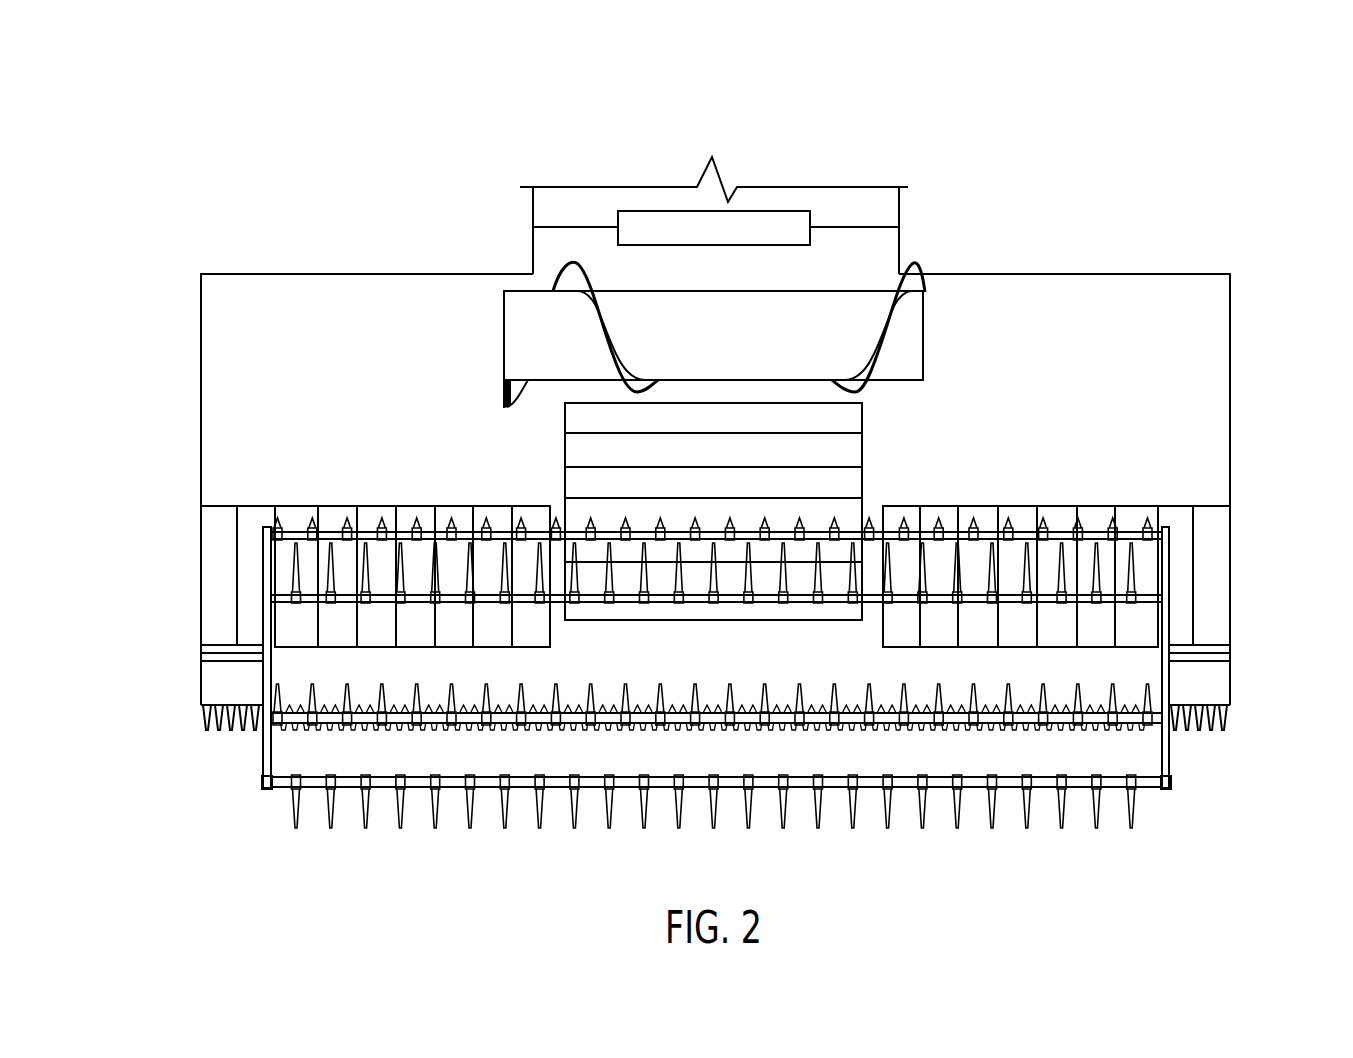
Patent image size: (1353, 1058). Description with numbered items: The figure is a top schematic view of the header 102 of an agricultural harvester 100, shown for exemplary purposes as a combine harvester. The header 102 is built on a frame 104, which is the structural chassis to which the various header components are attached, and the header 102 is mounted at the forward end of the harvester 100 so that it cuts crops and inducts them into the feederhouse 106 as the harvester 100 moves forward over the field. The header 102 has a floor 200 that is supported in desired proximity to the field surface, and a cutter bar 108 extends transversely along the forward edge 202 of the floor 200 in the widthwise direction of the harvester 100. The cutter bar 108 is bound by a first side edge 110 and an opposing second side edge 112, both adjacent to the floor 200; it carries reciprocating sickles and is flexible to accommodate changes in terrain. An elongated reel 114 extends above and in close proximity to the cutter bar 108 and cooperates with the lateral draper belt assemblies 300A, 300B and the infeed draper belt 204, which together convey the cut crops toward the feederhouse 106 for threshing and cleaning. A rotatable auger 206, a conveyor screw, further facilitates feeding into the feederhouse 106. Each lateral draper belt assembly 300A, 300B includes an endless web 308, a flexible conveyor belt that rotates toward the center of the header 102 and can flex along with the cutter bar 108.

The agricultural harvester 100 is at (608, 198).
The header 102 is at (286, 168).
The frame 104 is at (1058, 273).
The feederhouse 106 is at (780, 218).
The cutter bar 108 is at (215, 718).
The first side edge 110 is at (200, 350).
The second side edge 112 is at (1232, 350).
The reel 114 is at (257, 760).
The floor 200 is at (217, 677).
The forward edge 202 is at (509, 690).
The infeed draper belt 204 is at (863, 423).
The rotatable auger 206 is at (853, 298).
The lateral draper belt assembly 300A is at (1197, 488).
The lateral draper belt assembly 300B is at (231, 483).
The endless web 308 is at (212, 593).